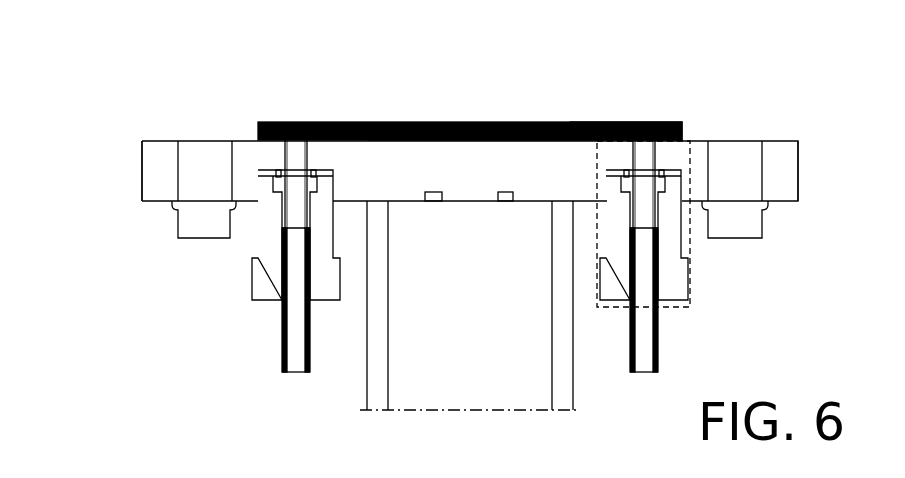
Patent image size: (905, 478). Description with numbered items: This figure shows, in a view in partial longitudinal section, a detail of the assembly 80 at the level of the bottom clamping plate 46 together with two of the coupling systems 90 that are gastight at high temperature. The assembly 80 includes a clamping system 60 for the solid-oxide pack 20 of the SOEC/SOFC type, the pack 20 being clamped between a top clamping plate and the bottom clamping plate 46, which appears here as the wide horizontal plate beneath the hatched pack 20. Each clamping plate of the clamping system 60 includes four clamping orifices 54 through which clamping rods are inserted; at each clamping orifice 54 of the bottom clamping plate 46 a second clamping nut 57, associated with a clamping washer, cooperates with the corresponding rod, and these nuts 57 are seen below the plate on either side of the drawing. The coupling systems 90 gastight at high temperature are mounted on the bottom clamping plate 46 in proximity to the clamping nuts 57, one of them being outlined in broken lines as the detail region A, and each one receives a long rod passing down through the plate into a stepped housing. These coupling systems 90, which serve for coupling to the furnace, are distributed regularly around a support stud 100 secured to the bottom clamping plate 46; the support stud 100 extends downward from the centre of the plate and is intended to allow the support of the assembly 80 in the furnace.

The assembly 80 is at (176, 88).
The clamping orifice 54 is at (193, 150).
The clamping system 60 is at (130, 165).
The second clamping nut 57 is at (190, 218).
The solid-oxide pack 20 is at (643, 120).
The bottom clamping plate 46 is at (393, 158).
The region A is at (688, 130).
The coupling system gastight at high temperature 90 is at (210, 253).
The support stud 100 is at (427, 328).